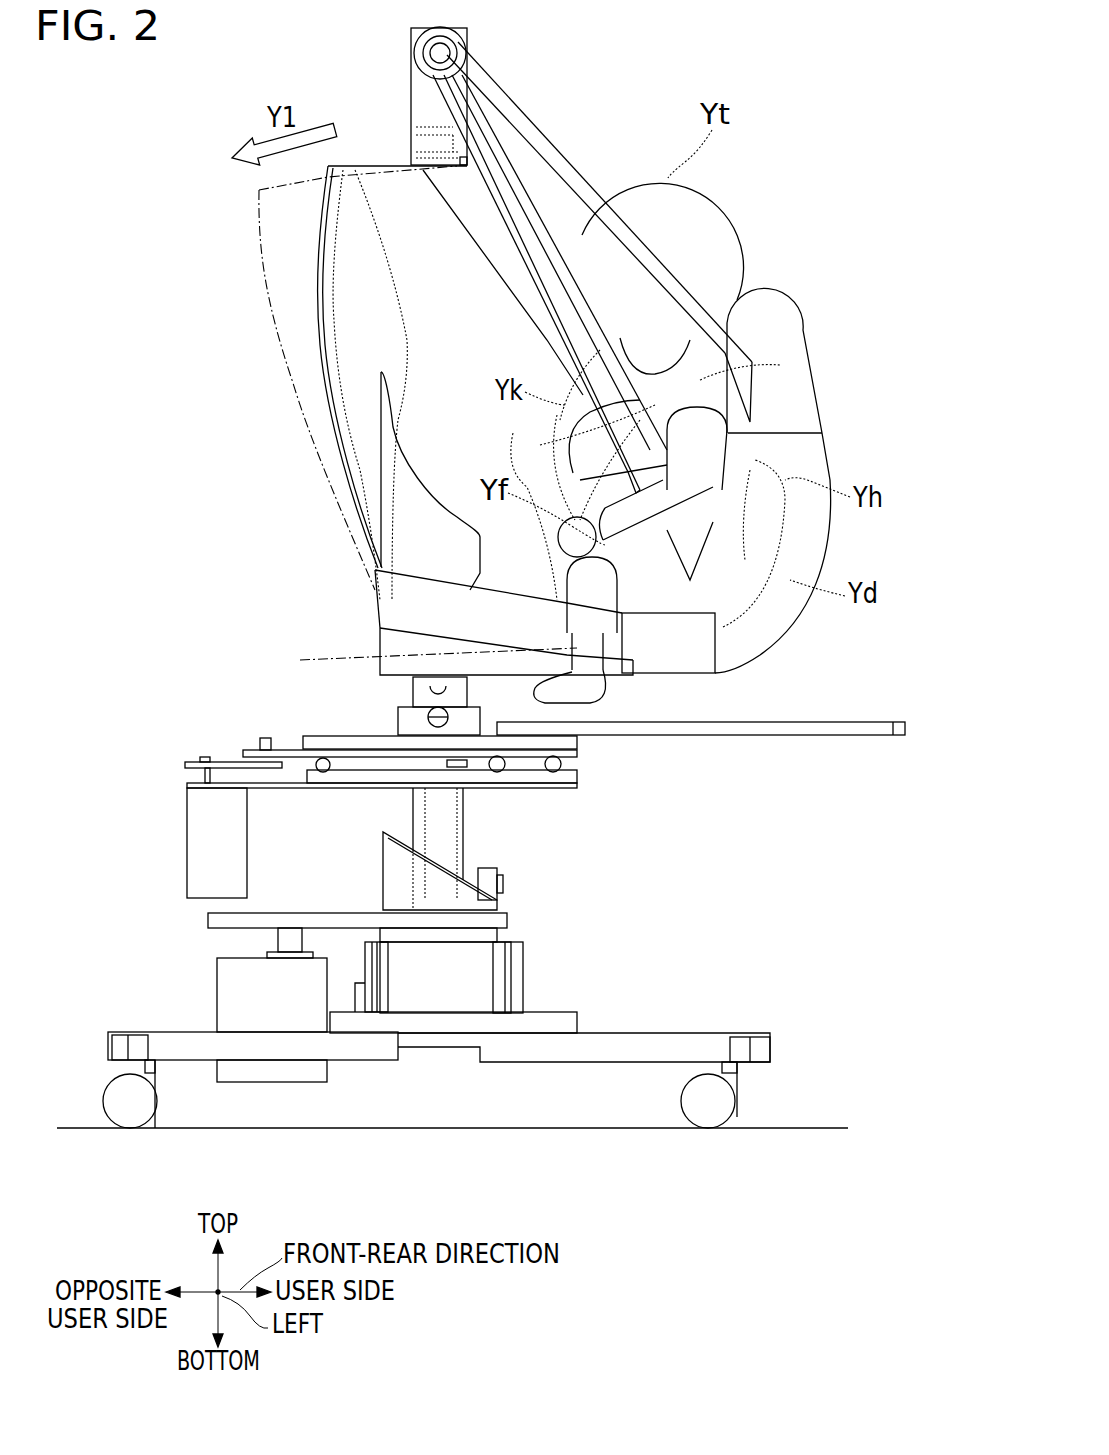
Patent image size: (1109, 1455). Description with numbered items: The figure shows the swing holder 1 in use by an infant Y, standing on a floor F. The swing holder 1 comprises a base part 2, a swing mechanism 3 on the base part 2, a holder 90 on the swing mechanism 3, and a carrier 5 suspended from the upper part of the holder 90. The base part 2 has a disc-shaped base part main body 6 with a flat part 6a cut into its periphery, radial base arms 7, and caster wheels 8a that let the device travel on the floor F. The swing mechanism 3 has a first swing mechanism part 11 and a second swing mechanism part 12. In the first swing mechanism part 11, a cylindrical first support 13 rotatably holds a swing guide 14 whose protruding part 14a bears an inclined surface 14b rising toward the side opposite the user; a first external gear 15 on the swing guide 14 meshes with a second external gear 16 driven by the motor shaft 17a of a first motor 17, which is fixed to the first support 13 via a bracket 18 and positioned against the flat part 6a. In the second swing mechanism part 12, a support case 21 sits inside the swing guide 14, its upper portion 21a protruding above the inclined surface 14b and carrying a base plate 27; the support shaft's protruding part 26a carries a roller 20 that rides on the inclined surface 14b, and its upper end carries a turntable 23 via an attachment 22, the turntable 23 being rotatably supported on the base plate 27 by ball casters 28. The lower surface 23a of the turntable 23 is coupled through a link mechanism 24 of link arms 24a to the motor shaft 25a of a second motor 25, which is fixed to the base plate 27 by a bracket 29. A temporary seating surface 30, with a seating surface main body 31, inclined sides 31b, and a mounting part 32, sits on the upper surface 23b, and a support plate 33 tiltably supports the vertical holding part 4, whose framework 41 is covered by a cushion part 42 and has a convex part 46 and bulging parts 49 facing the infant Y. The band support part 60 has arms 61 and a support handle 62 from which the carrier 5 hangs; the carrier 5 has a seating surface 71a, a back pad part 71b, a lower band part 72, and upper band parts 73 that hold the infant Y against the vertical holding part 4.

The swing holder 1 is at (785, 135).
The base part 2 is at (742, 1000).
The swing mechanism 3 is at (62, 885).
The vertical holding part 4 is at (208, 372).
The carrier 5 is at (808, 300).
The base part main body 6 is at (558, 1020).
The flat part 6a is at (330, 1020).
The base arm 7 is at (175, 1033).
The wheel 8a is at (130, 1120).
The first swing mechanism part 11 is at (178, 980).
The second swing mechanism part 12 is at (172, 864).
The first support 13 is at (523, 968).
The swing guide 14 is at (383, 856).
The protruding part 14a is at (385, 898).
The inclined surface 14b is at (480, 878).
The first external gear 15 is at (507, 920).
The second external gear 16 is at (266, 913).
The first motor 17 is at (217, 1000).
The motor shaft 17a is at (278, 936).
The bracket 18 is at (365, 965).
The roller 20 is at (503, 887).
The support case 21 is at (413, 830).
The shaft portion 21a is at (450, 806).
The attachment 22 is at (405, 730).
The turntable 23 is at (402, 705).
The lower surface 23a is at (345, 745).
The upper surface 23b is at (490, 672).
The link mechanism 24 is at (255, 750).
The link arm 24a is at (265, 745).
The second motor 25 is at (187, 815).
The motor shaft 25a is at (203, 774).
The protruding part 26a is at (470, 834).
The base plate 27 is at (540, 787).
The ball caster 28 is at (565, 766).
The bracket 29 is at (270, 790).
The temporary seating surface 30 is at (860, 715).
The seating surface main body 31 is at (828, 738).
The inclined side 31b is at (598, 720).
The mounting part 32 is at (520, 672).
The support plate 33 is at (433, 672).
The framework 41 is at (318, 290).
The cushion part 42 is at (322, 348).
The convex part 46 is at (770, 540).
The bulging part 49 is at (760, 360).
The band support part 60 is at (398, 52).
The arm 61 is at (416, 97).
The support handle 62 is at (462, 68).
The seating surface 71a is at (676, 675).
The back pad part 71b is at (805, 456).
The lower band part 72 is at (388, 600).
The upper band part 73 is at (555, 163).
The holder 90 is at (318, 396).
The infant Y is at (770, 380).
The floor F is at (800, 1125).